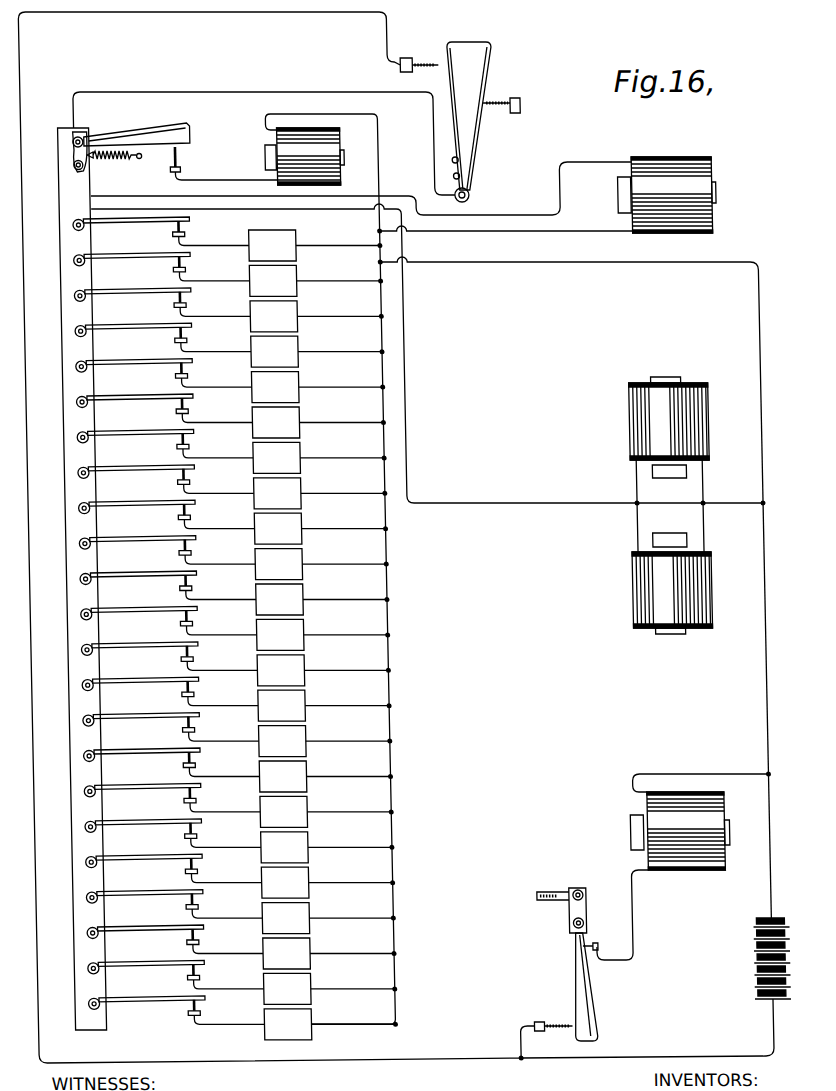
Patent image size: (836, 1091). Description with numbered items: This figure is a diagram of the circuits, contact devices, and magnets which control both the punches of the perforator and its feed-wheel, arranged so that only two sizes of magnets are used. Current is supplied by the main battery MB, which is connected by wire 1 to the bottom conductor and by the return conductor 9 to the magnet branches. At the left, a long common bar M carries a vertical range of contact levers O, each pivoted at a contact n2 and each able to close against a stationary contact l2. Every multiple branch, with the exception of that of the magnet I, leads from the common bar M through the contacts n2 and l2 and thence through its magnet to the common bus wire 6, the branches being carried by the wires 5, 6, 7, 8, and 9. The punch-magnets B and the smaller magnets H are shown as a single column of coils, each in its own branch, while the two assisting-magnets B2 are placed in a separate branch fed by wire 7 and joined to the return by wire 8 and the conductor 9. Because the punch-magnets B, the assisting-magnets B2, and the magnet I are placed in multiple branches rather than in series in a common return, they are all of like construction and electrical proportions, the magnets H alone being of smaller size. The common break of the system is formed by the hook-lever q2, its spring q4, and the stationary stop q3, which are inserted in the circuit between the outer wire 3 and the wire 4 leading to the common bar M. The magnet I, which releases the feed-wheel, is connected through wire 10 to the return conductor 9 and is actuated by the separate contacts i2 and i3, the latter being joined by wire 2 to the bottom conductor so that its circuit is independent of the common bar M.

The wire 1 is at (770, 1034).
The wire 2 is at (292, 1058).
The wire 3 is at (236, 1078).
The wire 4 is at (113, 77).
The wire 5 is at (243, 184).
The wire 6 is at (345, 569).
The wire 7 is at (334, 212).
The wire 8 is at (528, 266).
The wire 9 is at (752, 648).
The wire 10 is at (717, 778).
The common bar M is at (62, 494).
The main battery MB is at (736, 957).
The magnet for releasing the feed-wheel I is at (688, 848).
The punch-magnet B is at (288, 152).
The assisting-magnet B2 is at (650, 588).
The magnet H is at (262, 770).
The contact lever O is at (153, 128).
The contact n2 is at (69, 791).
The contact l2 is at (178, 159).
The hook-lever q2 is at (486, 60).
The stationary stop q3 is at (424, 62).
The spring q4 is at (450, 106).
The contact i2 is at (566, 982).
The contact i3 is at (553, 1000).